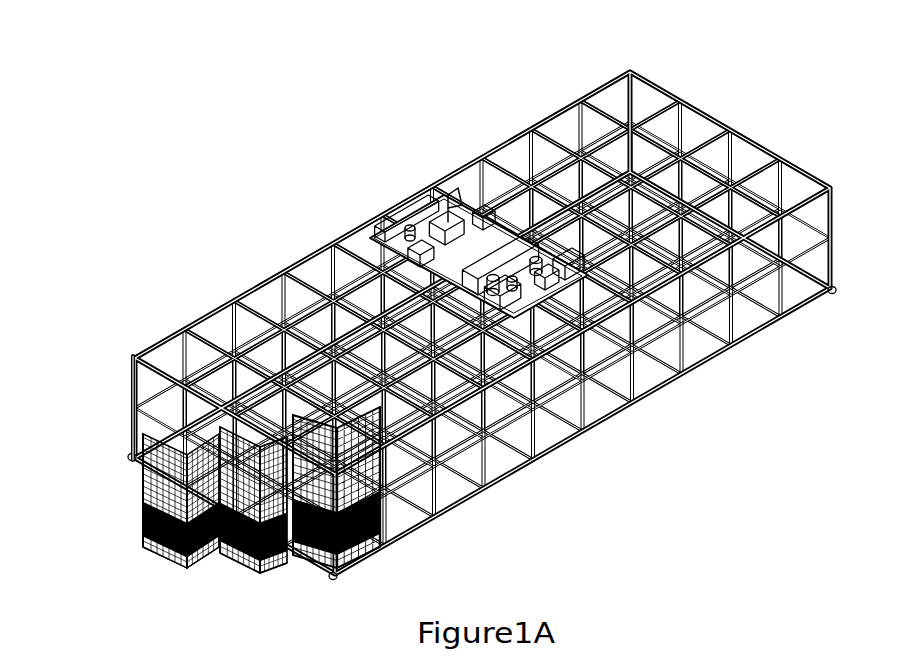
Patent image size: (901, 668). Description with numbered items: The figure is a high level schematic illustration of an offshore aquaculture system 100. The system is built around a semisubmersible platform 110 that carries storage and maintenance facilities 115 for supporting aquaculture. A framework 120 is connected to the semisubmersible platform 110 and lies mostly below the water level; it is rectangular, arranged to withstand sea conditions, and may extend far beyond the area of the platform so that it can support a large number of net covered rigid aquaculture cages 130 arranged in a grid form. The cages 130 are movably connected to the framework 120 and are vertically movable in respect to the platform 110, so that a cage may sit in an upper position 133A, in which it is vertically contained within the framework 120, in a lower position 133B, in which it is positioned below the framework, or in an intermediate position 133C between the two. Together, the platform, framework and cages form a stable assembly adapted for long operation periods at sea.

The offshore aquaculture system 100 is at (117, 82).
The semisubmersible platform 110 is at (536, 127).
The storage and maintenance facilities 115 is at (374, 212).
The framework 120 is at (137, 412).
The net covered rigid aquaculture cages 130 is at (143, 512).
The upper position 133A is at (151, 568).
The intermediate positions 133C is at (227, 578).
The lower position 133B is at (310, 578).